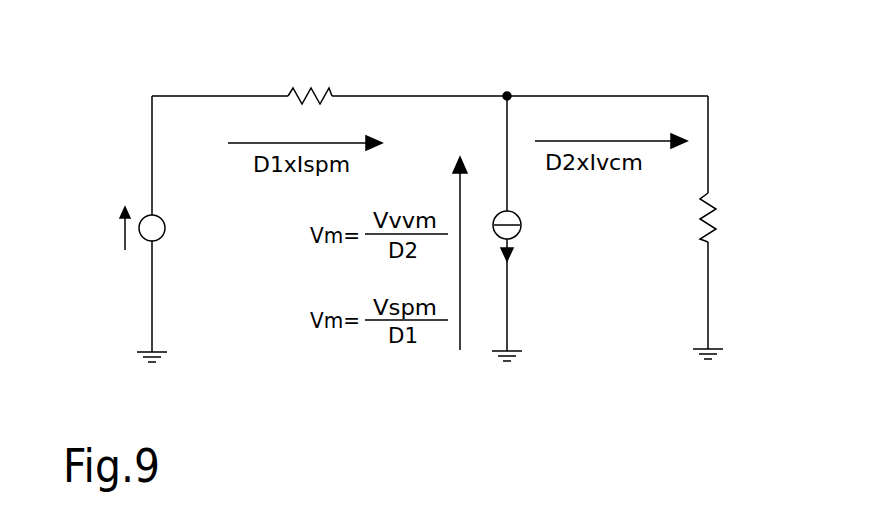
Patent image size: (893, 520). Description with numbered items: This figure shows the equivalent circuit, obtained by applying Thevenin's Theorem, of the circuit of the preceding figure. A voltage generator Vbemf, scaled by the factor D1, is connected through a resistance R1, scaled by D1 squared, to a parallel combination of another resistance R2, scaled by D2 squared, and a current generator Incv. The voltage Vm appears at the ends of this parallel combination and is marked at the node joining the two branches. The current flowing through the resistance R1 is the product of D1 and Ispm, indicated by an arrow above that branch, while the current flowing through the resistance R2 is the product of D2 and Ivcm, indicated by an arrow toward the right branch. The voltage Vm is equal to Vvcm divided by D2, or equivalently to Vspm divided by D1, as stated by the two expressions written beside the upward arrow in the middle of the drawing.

The resistance R1 is at (335, 52).
The resistance R2 is at (770, 217).
The voltage Vm is at (510, 71).
The voltage generator Vbemf is at (258, 233).
The current generator Incv is at (530, 251).